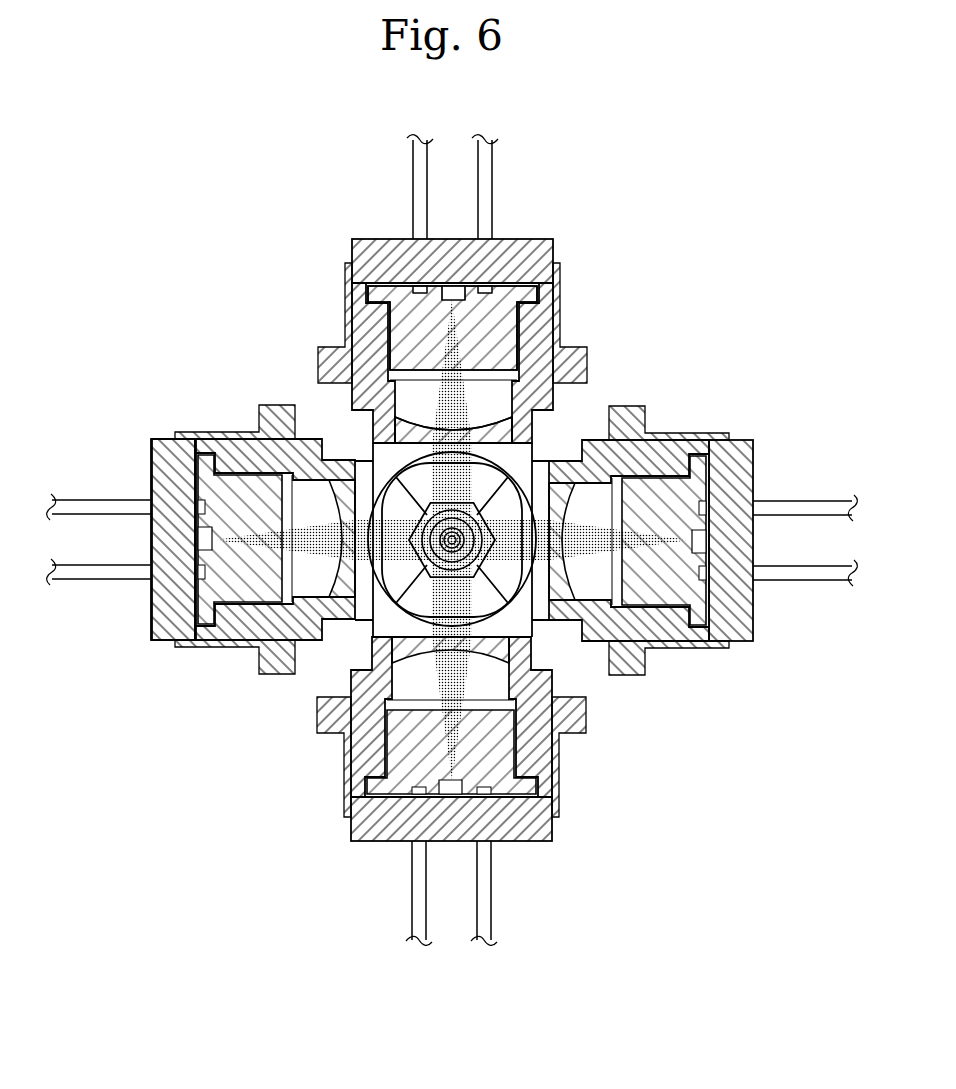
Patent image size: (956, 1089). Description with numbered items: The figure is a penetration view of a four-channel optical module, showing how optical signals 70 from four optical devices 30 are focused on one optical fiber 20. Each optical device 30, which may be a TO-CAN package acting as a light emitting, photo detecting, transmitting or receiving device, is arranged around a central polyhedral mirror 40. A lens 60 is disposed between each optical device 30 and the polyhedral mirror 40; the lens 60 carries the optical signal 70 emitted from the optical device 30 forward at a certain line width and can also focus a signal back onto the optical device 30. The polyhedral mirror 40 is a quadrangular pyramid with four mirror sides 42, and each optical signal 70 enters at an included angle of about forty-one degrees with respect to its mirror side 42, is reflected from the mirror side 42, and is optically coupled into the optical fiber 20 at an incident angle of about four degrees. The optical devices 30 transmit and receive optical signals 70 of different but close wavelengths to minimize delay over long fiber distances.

The optical fiber 20 is at (463, 545).
The optical device 30 is at (460, 292).
The polyhedral mirror 40 is at (378, 502).
The mirror side 42 is at (398, 578).
The lens 60 is at (500, 400).
The optical signal 70 is at (442, 362).